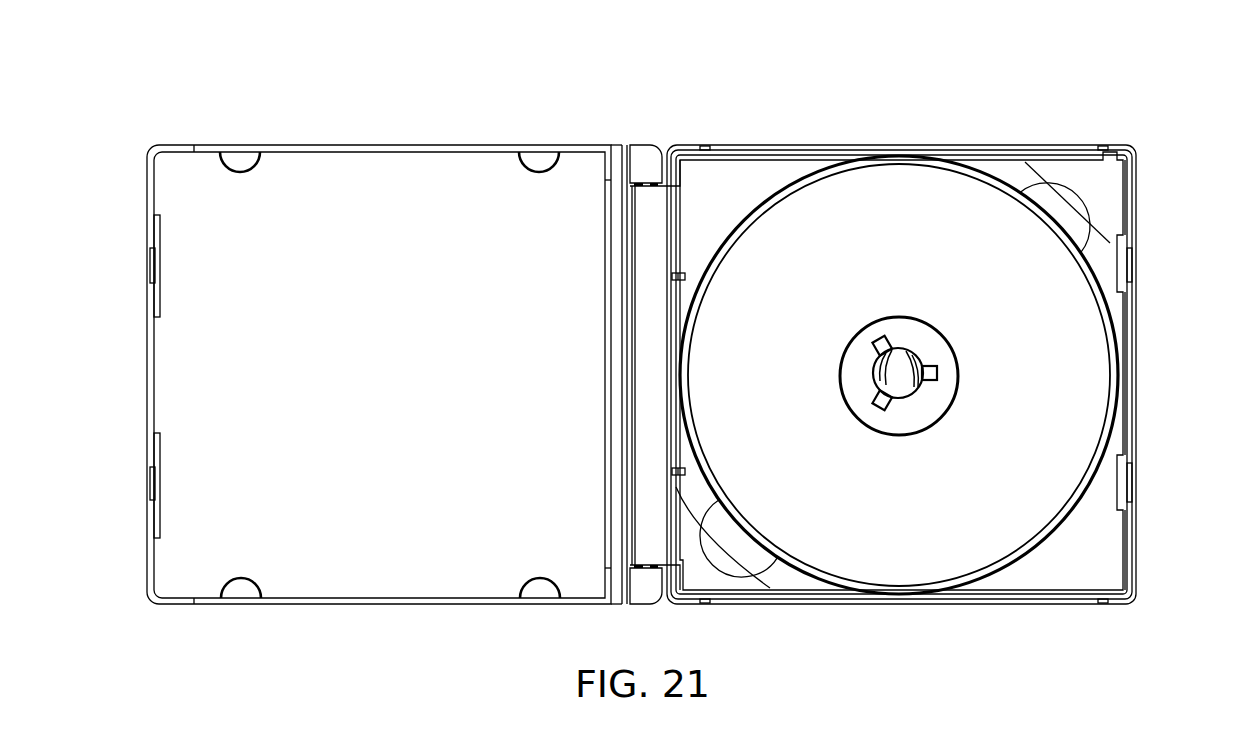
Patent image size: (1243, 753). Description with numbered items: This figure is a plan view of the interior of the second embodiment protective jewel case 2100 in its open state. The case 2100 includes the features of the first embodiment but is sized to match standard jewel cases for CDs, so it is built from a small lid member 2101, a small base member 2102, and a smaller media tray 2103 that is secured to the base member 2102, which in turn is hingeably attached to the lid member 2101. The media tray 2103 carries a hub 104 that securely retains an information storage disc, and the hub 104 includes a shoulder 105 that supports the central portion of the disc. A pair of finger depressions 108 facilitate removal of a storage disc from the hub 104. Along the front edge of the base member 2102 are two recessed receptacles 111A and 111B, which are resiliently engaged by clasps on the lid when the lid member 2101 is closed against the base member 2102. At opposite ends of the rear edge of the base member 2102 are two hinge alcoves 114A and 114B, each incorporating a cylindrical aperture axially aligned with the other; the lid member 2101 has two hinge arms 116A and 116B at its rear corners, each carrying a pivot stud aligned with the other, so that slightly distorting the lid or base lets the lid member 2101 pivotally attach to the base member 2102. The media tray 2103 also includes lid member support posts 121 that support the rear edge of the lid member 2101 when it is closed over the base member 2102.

The second embodiment protective jewel case 2100 is at (634, 79).
The small lid member 2101 is at (420, 390).
The small base member 2102 is at (800, 142).
The smaller media tray 2103 is at (920, 252).
The hub 104 is at (912, 397).
The shoulder 105 is at (935, 355).
The finger depressions 108 is at (1058, 208).
The recessed receptacle 111A is at (1146, 270).
The recessed receptacle 111B is at (1146, 477).
The hinge alcove 114A is at (655, 146).
The hinge alcove 114B is at (663, 600).
The hinge arm 116A is at (640, 163).
The hinge arm 116B is at (642, 585).
The lid member support posts 121 is at (673, 447).